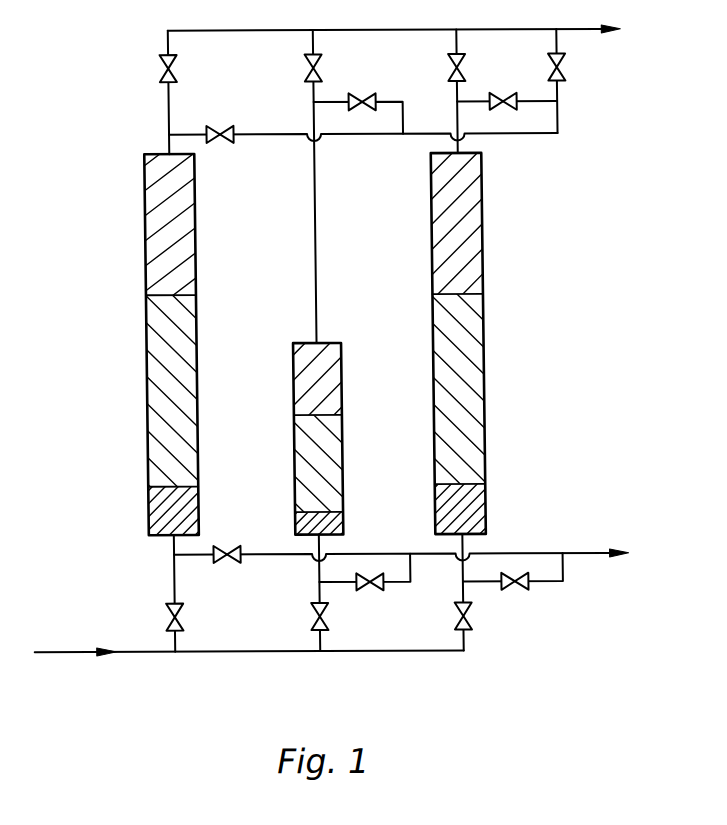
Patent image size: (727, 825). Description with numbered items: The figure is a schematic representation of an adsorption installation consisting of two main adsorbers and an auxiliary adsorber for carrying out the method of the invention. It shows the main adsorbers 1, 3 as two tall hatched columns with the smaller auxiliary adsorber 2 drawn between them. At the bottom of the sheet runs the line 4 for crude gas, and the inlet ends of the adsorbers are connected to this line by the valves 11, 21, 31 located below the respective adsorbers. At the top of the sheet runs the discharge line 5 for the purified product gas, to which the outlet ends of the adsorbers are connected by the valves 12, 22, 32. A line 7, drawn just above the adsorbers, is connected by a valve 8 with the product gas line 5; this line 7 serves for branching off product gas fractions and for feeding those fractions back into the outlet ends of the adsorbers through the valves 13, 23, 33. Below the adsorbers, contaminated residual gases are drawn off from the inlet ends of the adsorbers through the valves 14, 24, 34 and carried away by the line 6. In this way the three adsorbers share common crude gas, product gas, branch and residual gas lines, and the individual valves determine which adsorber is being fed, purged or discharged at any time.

The main adsorber 1 is at (147, 354).
The auxiliary adsorber 2 is at (292, 427).
The main adsorber 3 is at (486, 359).
The line for crude gas 4 is at (69, 649).
The discharge line for purified product gas 5 is at (594, 36).
The line for residual gases 6 is at (595, 553).
The line 7 is at (377, 138).
The valve 8 is at (569, 77).
The valve 11 is at (161, 616).
The valve 12 is at (166, 60).
The valve 13 is at (226, 142).
The valve 14 is at (223, 566).
The valve 21 is at (306, 617).
The valve 22 is at (310, 59).
The valve 23 is at (365, 92).
The valve 24 is at (369, 590).
The valve 31 is at (472, 618).
The valve 32 is at (453, 62).
The valve 33 is at (511, 93).
The valve 34 is at (517, 593).